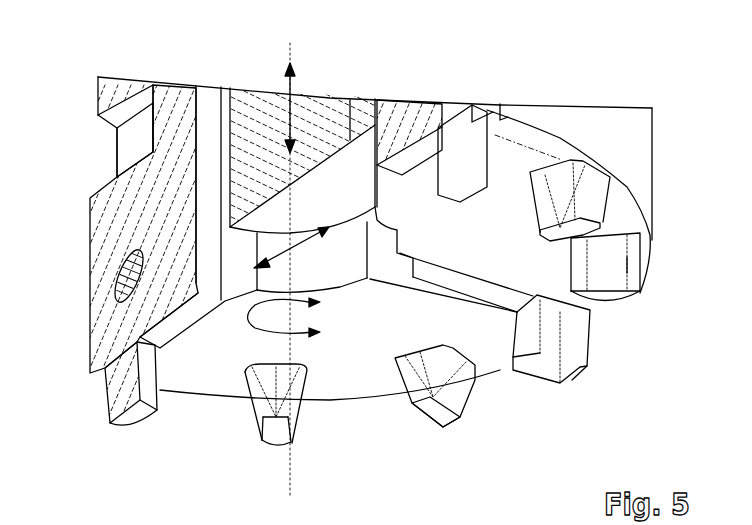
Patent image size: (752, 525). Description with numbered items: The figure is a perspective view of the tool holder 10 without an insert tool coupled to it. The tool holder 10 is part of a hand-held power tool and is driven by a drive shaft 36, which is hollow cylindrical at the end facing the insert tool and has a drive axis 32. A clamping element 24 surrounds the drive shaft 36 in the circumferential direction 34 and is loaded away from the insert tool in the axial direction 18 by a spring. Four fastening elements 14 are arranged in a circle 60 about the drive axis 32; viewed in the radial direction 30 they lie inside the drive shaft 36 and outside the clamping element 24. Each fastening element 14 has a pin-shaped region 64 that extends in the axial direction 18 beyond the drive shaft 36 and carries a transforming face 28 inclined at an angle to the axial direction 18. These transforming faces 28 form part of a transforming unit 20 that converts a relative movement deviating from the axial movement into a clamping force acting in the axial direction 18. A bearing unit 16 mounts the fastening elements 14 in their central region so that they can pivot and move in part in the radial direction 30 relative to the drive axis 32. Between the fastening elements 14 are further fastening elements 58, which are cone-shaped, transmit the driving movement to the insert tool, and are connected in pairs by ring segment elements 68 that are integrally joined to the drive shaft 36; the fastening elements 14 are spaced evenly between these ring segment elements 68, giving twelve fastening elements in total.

The tool holder 10 is at (337, 418).
The fastening element 14 is at (97, 265).
The bearing unit 16 is at (98, 286).
The axial direction 18 is at (311, 103).
The transforming unit 20 is at (508, 358).
The clamping element 24 is at (333, 123).
The transforming face 28 is at (513, 340).
The radial direction 30 is at (298, 247).
The drive axis 32 is at (289, 60).
The circumferential direction 34 is at (258, 326).
The drive shaft 36 is at (113, 90).
The further fastening element 58 is at (605, 251).
The circle 60 is at (367, 370).
The pin-shaped region 64 is at (120, 388).
The ring segment element 68 is at (192, 353).